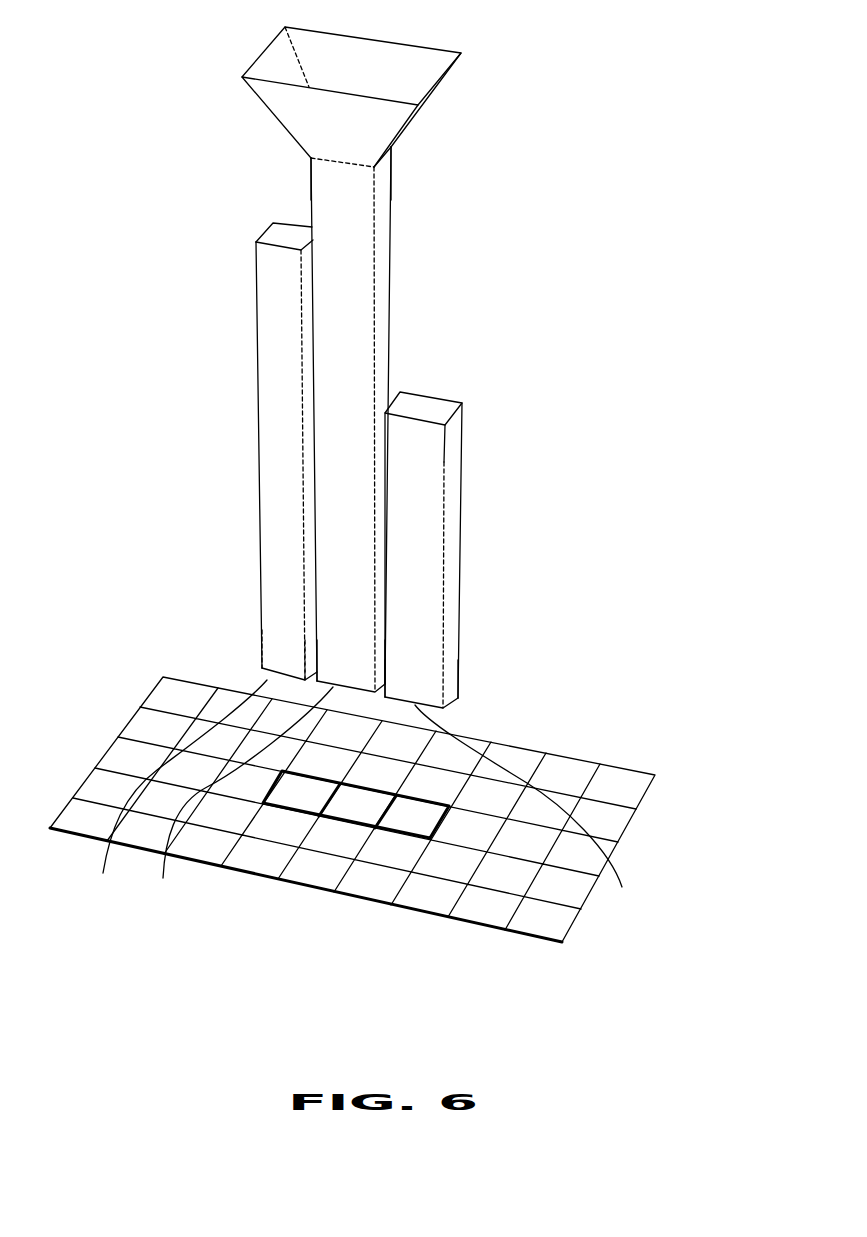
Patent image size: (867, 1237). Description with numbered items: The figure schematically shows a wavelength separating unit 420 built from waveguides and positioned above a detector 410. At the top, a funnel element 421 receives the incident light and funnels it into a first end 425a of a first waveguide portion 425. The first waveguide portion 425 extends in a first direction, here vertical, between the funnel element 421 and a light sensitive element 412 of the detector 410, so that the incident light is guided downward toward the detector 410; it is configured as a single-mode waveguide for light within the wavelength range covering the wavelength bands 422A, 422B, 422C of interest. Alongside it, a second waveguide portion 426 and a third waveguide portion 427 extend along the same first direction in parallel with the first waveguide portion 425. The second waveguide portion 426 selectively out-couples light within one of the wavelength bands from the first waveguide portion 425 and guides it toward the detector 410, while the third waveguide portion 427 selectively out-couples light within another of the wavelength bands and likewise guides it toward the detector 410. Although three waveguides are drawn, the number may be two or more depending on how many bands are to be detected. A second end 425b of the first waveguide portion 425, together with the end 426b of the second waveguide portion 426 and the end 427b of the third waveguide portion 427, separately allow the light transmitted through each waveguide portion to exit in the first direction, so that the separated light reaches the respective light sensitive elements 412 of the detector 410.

The detector 410 is at (586, 910).
The light sensitive element 412 is at (298, 793).
The wavelength separating unit 420 is at (550, 138).
The funnel element 421 is at (310, 113).
The wavelength band 422A is at (166, 795).
The wavelength band 422B is at (240, 801).
The wavelength band 422C is at (544, 811).
The first waveguide portion 425 is at (440, 419).
The first end of the first waveguide portion 425a is at (344, 172).
The second end of the first waveguide portion 425b is at (352, 673).
The second waveguide portion 426 is at (485, 552).
The end of the second waveguide portion 426b is at (425, 680).
The third waveguide portion 427 is at (208, 451).
The end of the third waveguide portion 427b is at (283, 652).